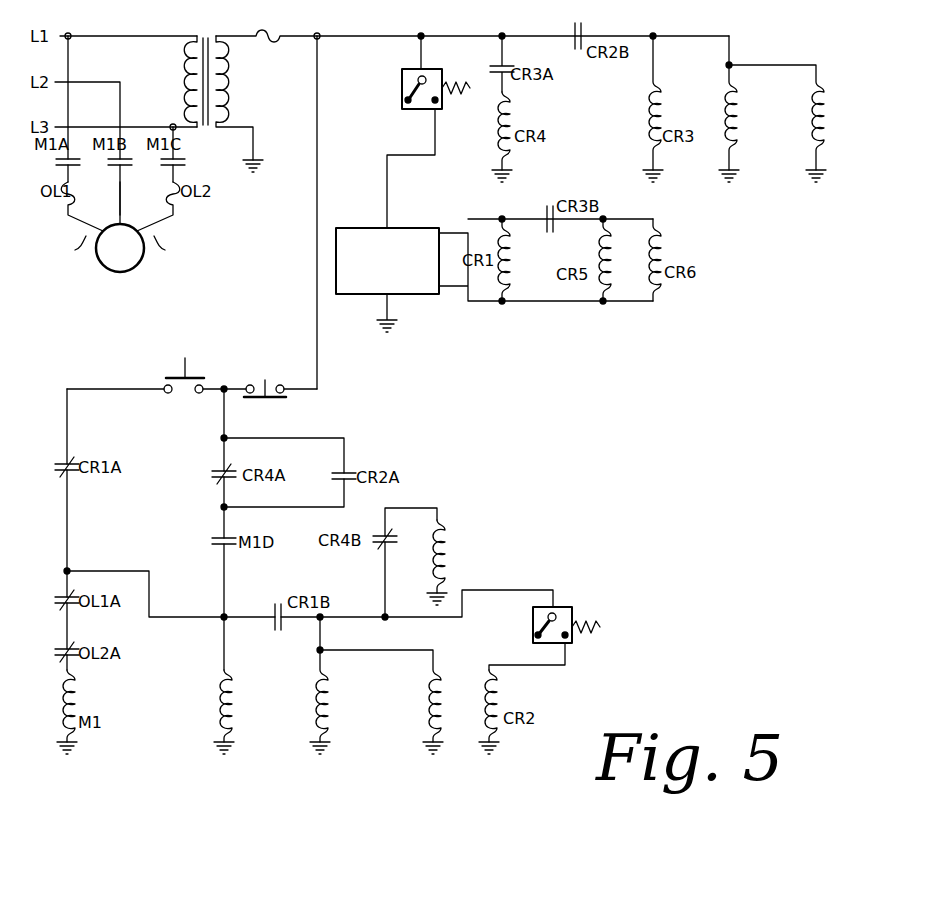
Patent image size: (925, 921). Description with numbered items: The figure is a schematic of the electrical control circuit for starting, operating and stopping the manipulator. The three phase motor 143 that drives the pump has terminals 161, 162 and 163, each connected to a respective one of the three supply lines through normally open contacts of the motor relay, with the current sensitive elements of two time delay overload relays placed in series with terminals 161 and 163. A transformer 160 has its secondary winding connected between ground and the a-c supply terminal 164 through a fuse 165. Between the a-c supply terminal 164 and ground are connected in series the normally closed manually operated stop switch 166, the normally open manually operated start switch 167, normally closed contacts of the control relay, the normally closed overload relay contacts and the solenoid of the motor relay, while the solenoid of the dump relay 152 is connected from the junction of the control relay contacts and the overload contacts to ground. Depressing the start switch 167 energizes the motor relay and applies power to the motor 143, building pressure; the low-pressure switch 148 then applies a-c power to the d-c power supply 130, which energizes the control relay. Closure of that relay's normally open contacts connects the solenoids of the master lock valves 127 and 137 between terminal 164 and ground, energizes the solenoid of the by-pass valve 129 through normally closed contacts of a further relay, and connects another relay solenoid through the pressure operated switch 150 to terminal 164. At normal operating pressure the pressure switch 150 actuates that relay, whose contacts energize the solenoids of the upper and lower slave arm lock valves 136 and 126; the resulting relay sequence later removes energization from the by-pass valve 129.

The motor 143 is at (104, 268).
The motor terminal 161 is at (66, 248).
The motor terminal 162 is at (120, 200).
The motor terminal 163 is at (172, 248).
The transformer 160 is at (203, 38).
The fuse 165 is at (266, 32).
The a-c supply terminal 164 is at (321, 34).
The pressure switch 148 is at (428, 109).
The d-c power supply 130 is at (494, 264).
The lower slave arm lock valve solenoid 126 is at (736, 130).
The upper slave arm lock valve solenoid 136 is at (806, 120).
The start switch 167 is at (186, 364).
The stop switch 166 is at (265, 380).
The dump relay solenoid 152 is at (217, 700).
The by-pass valve solenoid 129 is at (452, 569).
The pressure operated switch 150 is at (575, 606).
The master lock valve solenoid 127 is at (323, 698).
The master lock valve solenoid 137 is at (430, 694).